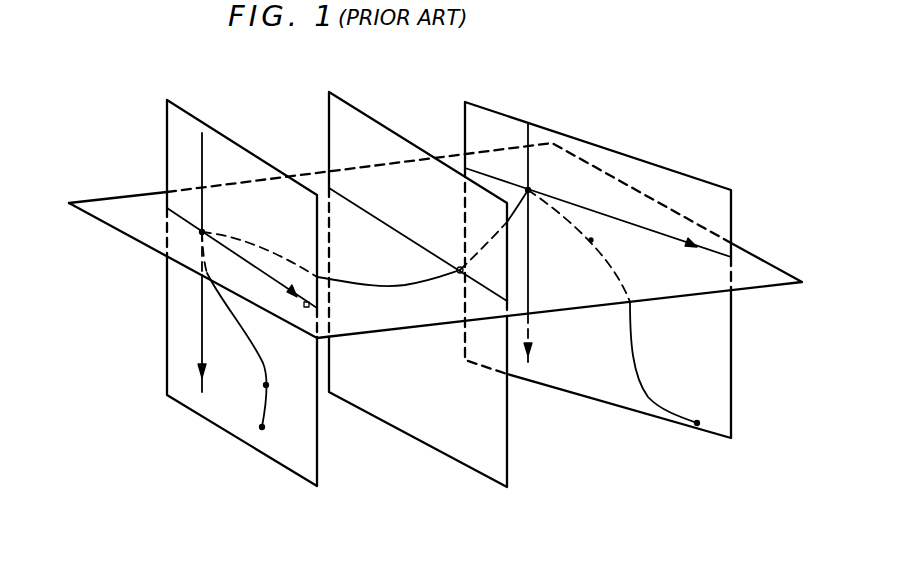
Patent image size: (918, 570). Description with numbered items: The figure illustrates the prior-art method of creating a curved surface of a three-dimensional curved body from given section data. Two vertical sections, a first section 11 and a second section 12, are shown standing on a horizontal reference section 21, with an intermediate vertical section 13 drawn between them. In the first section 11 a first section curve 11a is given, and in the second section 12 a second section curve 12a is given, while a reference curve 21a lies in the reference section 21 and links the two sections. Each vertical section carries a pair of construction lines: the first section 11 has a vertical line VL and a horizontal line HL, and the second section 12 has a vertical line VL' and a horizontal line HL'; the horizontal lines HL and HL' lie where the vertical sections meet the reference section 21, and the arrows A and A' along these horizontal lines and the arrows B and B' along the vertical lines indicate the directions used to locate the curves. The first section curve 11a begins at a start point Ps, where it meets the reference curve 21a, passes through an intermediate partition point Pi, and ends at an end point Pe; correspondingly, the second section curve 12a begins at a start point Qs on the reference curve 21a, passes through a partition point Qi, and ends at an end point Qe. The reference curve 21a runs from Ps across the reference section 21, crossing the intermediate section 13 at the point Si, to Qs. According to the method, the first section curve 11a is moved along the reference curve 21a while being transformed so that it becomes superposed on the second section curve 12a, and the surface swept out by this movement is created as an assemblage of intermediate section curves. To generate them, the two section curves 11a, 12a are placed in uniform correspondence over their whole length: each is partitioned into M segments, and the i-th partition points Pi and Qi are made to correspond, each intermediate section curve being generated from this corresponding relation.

The reference section 21 is at (106, 196).
The reference curve 21a is at (366, 282).
The first section 11 is at (223, 418).
The first section curve 11a is at (262, 428).
The intermediate vertical plane 13 is at (358, 116).
The second section 12 is at (721, 188).
The second section curve 12a is at (648, 398).
The vertical line on first plane VL is at (159, 262).
The horizontal line on first plane HL is at (260, 334).
The vertical line on second plane VL' is at (565, 228).
The horizontal line on second plane HL' is at (598, 193).
The start point P Ps is at (211, 221).
The i-th partition point of first section curve Pi is at (275, 387).
The end point P Pe is at (275, 429).
The start point Q Qs is at (541, 182).
The i-th partition point of second section curve Qi is at (603, 241).
The end point Q Qe is at (709, 415).
The intersection point S Si is at (458, 273).
The direction A is at (298, 292).
The direction A' is at (696, 257).
The direction B is at (216, 392).
The direction B' is at (545, 361).